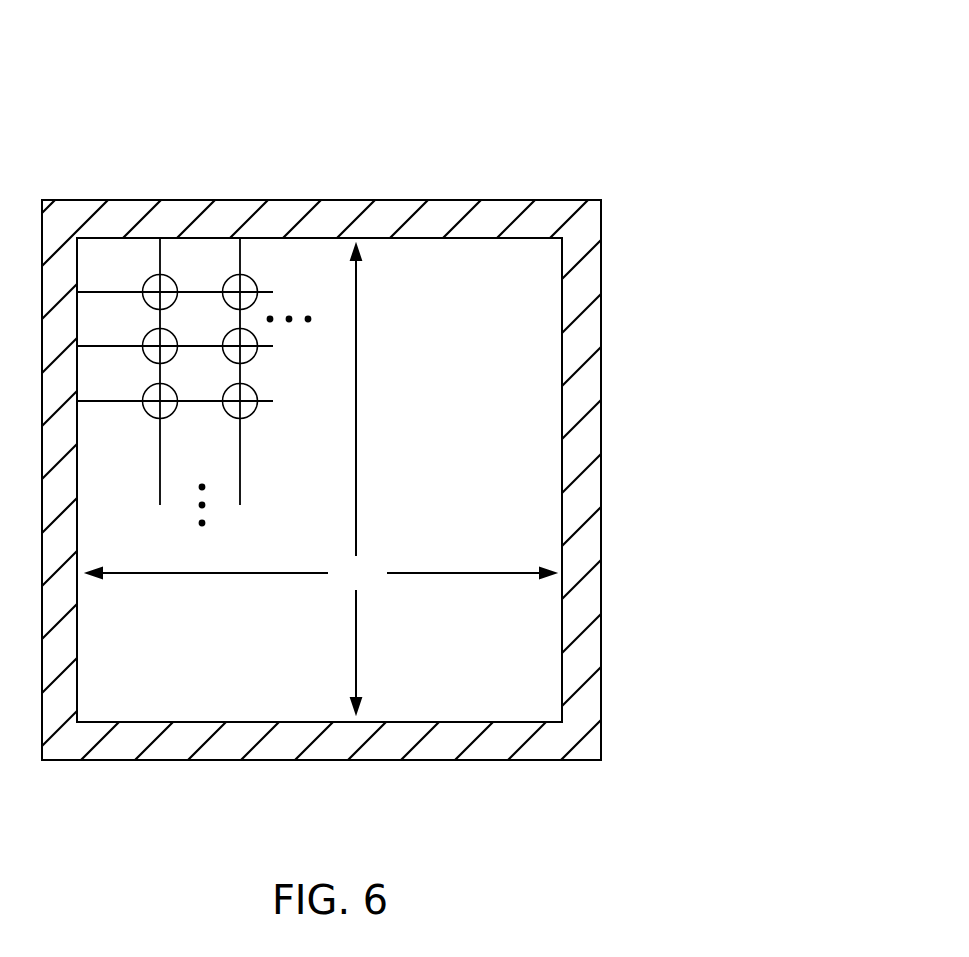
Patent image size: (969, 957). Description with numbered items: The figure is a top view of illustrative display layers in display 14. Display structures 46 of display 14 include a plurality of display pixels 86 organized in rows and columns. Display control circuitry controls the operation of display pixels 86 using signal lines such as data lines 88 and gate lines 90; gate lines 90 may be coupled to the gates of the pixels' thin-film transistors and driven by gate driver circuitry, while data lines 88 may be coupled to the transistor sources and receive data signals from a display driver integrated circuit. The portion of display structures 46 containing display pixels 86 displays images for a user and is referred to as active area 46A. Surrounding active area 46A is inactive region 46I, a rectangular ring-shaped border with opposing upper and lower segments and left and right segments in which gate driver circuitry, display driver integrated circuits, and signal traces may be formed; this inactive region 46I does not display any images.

The display 14 is at (484, 400).
The display structures 46 is at (557, 198).
The inactive region 46I is at (592, 492).
The active area 46A is at (321, 479).
The display pixels 86 is at (162, 275).
The data lines 88 is at (162, 478).
The gate lines 90 is at (262, 347).